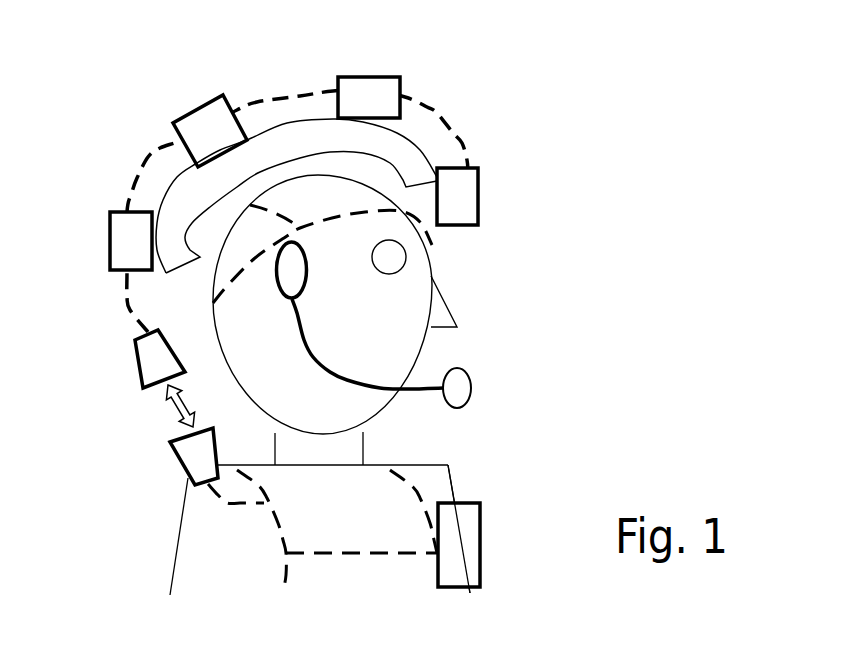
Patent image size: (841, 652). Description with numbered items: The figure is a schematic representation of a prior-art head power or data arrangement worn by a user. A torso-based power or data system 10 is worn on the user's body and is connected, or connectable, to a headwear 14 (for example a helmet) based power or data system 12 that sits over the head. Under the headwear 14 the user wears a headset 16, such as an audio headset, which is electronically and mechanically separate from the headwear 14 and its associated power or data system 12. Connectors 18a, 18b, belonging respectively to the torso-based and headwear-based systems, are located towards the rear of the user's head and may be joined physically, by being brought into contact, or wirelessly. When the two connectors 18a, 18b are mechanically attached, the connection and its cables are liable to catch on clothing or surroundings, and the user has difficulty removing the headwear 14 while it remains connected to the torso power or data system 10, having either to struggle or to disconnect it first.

The torso-based power or data system 10 is at (440, 490).
The headwear based power or data system 12 is at (449, 80).
The headwear 14 is at (296, 196).
The headset 16 is at (307, 287).
The connector 18a is at (177, 458).
The connector 18b is at (138, 365).